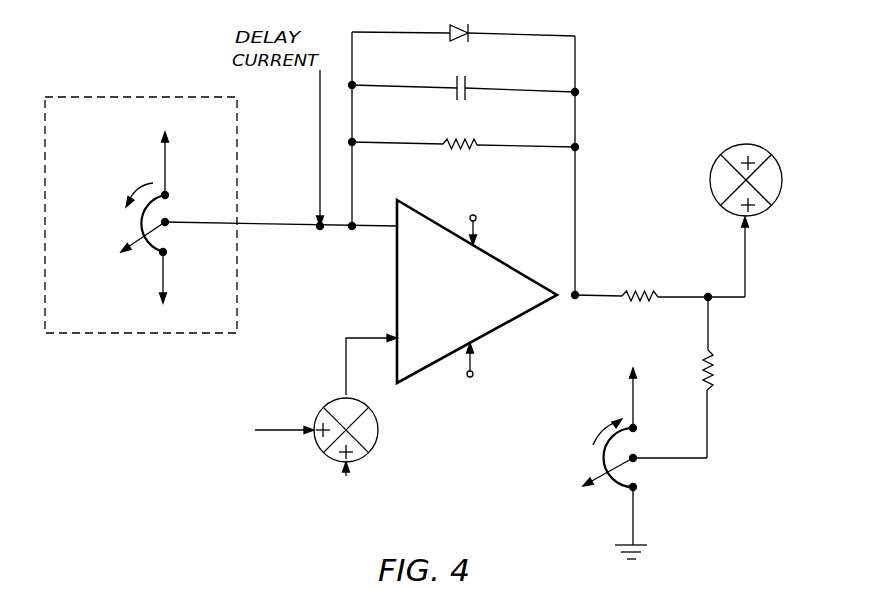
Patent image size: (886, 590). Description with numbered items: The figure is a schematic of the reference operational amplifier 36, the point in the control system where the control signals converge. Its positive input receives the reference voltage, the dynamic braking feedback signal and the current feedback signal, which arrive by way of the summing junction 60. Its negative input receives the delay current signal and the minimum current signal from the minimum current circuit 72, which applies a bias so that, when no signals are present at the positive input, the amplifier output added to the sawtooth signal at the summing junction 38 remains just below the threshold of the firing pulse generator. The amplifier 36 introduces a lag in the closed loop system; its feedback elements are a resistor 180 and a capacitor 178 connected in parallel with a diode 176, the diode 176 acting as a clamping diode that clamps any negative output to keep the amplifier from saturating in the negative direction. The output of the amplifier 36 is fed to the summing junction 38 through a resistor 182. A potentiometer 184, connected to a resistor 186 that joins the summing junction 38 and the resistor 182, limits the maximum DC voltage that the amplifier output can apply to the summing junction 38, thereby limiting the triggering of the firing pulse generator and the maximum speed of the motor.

The minimum current circuit 72 is at (160, 97).
The diode 176 is at (470, 30).
The capacitor 178 is at (468, 72).
The resistor 180 is at (468, 140).
The reference operational amplifier 36 is at (500, 268).
The summing junction 60 is at (314, 466).
The resistor 182 is at (643, 292).
The summing junction 38 is at (767, 180).
The resistor 186 is at (731, 370).
The potentiometer 184 is at (603, 460).